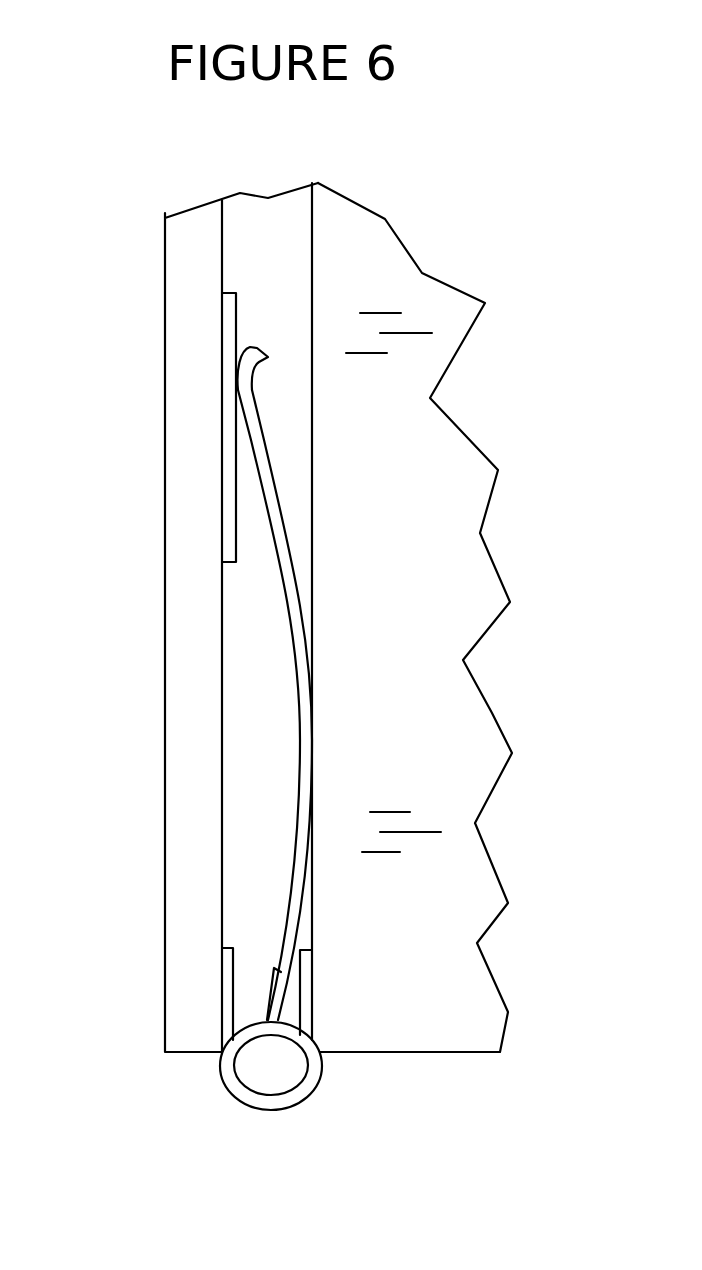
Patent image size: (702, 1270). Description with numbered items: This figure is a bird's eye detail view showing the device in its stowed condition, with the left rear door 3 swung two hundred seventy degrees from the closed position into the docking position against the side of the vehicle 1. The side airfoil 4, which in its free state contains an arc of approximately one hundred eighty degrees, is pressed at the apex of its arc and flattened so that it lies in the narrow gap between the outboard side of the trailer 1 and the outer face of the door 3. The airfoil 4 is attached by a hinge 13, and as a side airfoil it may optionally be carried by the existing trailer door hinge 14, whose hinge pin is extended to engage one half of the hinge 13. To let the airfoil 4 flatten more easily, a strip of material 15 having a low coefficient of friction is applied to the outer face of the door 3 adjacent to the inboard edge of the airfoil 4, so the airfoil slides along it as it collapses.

The vehicle 1 is at (420, 748).
The rear swinging door 3 is at (165, 592).
The side airfoil 4 is at (300, 787).
The hinge 13 is at (270, 985).
The trailer door hinge 14 is at (224, 1082).
The strip of low-friction material 15 is at (227, 462).